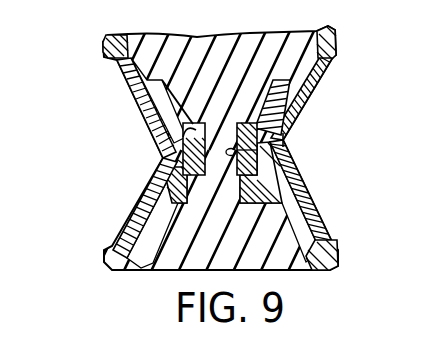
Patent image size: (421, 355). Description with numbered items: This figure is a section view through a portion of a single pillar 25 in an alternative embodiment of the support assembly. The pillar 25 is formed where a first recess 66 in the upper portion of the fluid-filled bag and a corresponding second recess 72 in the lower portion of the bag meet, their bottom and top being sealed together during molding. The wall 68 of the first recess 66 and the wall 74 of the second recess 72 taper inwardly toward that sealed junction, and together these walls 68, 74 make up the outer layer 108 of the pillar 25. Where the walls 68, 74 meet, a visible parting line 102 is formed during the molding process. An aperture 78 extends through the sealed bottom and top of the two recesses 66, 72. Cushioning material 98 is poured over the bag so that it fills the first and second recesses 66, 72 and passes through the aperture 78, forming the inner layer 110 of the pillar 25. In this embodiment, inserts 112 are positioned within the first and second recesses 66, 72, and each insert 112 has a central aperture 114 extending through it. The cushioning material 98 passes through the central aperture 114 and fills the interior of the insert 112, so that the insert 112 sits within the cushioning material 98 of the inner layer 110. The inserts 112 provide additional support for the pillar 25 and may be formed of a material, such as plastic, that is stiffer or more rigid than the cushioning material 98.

The first recess 66 is at (104, 45).
The cushioning material 98 is at (337, 36).
The wall 68 is at (140, 78).
The insert 112 is at (292, 90).
The pillar 25 is at (292, 127).
The aperture 78 is at (176, 126).
The parting line 102 is at (186, 152).
The central aperture 114 is at (262, 153).
The wall 74 is at (147, 200).
The outer layer 108 is at (303, 207).
The second recess 72 is at (153, 232).
The inner layer 110 is at (338, 262).